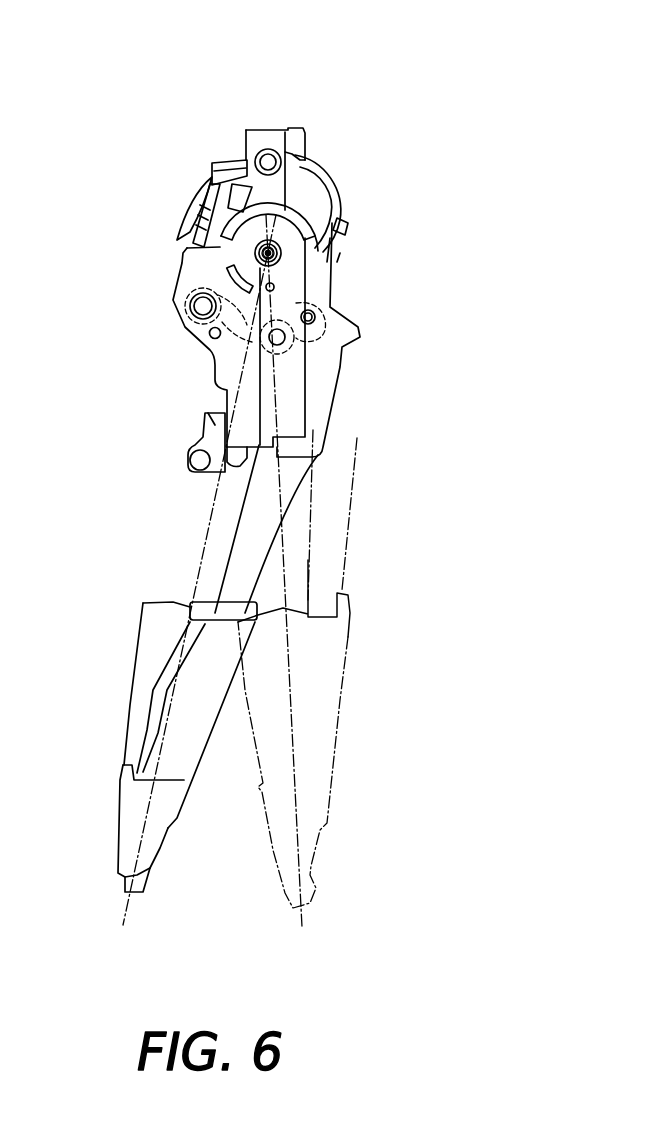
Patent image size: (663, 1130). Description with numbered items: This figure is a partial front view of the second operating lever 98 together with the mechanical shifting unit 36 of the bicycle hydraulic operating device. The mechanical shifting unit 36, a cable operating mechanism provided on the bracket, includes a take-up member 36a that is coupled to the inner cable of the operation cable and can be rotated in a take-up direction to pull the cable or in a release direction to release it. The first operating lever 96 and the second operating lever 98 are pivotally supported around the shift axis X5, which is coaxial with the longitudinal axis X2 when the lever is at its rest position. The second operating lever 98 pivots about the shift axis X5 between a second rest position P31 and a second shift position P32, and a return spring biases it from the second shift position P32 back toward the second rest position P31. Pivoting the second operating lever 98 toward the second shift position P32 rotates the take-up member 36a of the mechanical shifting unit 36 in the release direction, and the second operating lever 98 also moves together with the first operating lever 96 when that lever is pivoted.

The mechanical shifting unit 36 is at (296, 77).
The take-up member 36a is at (180, 273).
The first operating lever 96 is at (223, 417).
The second operating lever 98 is at (147, 743).
The longitudinal axis X2 is at (272, 253).
The shift axis X5 is at (364, 227).
The second rest position P31 is at (187, 589).
The second shift position P32 is at (292, 589).